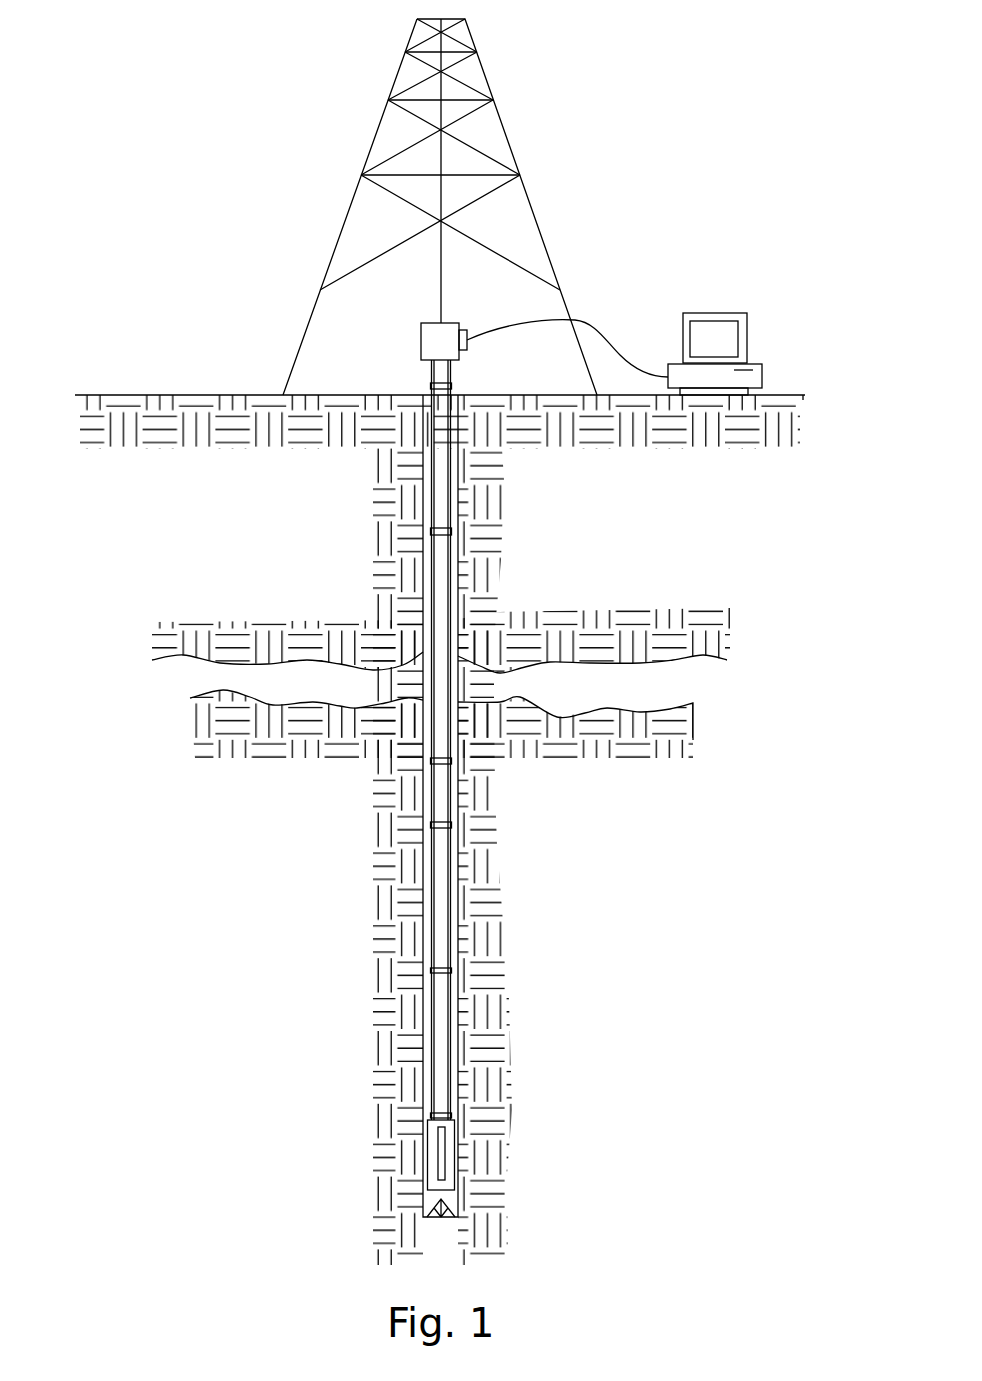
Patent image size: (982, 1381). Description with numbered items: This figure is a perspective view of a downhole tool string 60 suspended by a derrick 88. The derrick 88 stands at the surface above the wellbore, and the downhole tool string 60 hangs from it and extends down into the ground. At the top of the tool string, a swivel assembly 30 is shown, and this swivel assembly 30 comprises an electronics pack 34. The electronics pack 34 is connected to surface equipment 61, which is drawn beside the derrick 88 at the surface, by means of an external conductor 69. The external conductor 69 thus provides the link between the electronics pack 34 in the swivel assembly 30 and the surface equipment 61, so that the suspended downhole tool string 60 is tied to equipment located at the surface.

The derrick 88 is at (533, 207).
The swivel assembly 30 is at (441, 342).
The electronics pack 34 is at (462, 337).
The external conductor 69 is at (593, 323).
The surface equipment 61 is at (717, 335).
The downhole tool string 60 is at (463, 383).